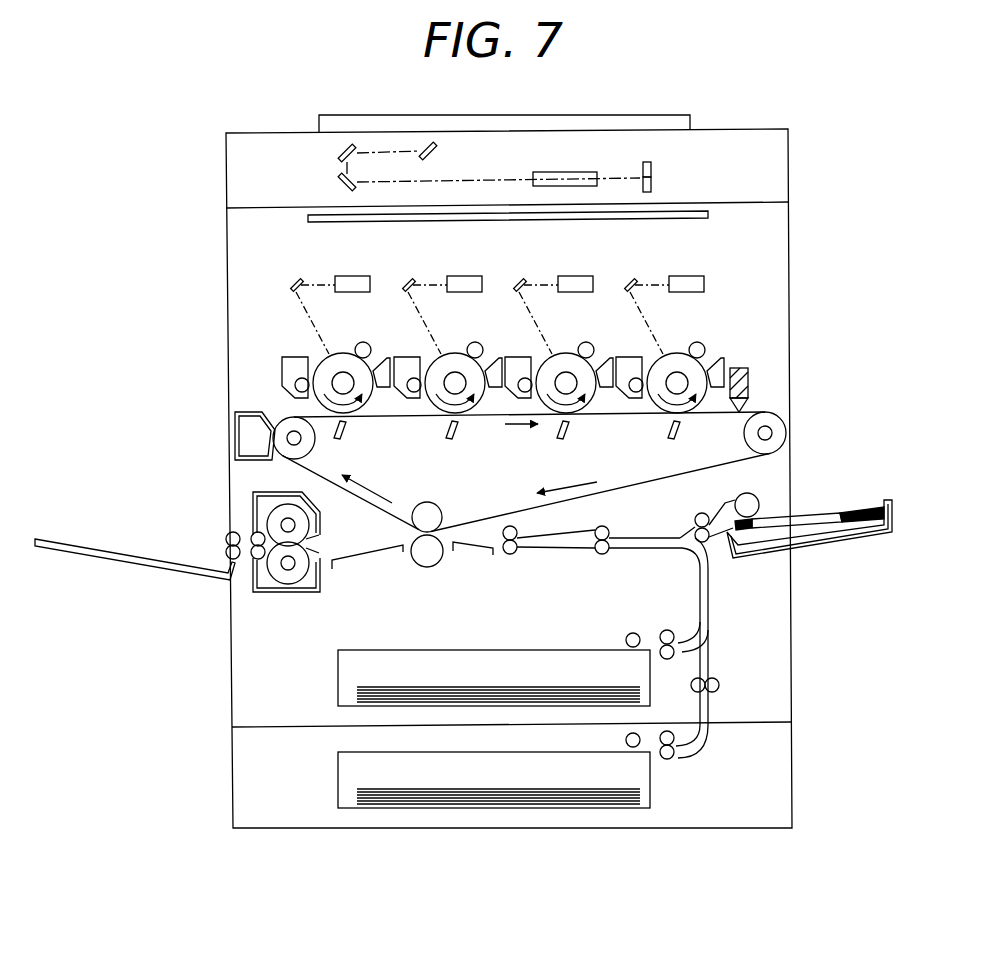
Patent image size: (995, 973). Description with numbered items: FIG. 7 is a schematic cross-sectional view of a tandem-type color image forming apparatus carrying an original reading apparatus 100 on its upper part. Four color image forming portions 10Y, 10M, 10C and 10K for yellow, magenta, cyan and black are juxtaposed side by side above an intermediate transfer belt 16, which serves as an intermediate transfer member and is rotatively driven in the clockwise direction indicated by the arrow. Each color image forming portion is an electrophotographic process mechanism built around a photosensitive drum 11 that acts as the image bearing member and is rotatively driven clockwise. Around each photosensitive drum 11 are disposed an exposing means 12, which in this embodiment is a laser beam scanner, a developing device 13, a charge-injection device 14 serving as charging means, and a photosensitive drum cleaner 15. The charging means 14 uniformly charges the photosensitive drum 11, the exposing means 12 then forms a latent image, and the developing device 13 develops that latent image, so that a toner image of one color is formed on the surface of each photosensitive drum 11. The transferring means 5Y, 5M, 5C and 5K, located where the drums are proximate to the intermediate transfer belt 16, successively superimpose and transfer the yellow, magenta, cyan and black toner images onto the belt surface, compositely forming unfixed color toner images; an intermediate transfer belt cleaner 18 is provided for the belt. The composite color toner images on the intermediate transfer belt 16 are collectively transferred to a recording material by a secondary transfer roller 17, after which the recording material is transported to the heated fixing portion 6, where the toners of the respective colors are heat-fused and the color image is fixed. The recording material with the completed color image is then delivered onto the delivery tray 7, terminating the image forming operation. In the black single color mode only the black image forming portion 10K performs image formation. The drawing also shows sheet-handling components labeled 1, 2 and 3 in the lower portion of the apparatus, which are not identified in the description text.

The original reading apparatus 100 is at (775, 160).
The yellow color image forming portion 10Y is at (275, 297).
The magenta color image forming portion 10M is at (390, 297).
The cyan color image forming portion 10C is at (502, 297).
The black color image forming portion 10K is at (725, 297).
The photosensitive drum 11 is at (330, 357).
The exposing means 12 is at (351, 293).
The developing device 13 is at (282, 366).
The charge-injection device 14 is at (369, 344).
The photosensitive drum cleaner 15 is at (383, 388).
The intermediate transfer belt 16 is at (636, 484).
The secondary transfer roller 17 is at (430, 558).
The intermediate transfer belt cleaner 18 is at (243, 432).
The transferring means 5Y is at (345, 440).
The transferring means 5M is at (453, 440).
The transferring means 5C is at (562, 440).
The transferring means 5K is at (681, 434).
The sheet feeding tray 1 is at (840, 545).
The sheet conveying path 2 is at (712, 633).
The registration rollers 3 is at (513, 555).
The fixing portion 6 is at (283, 590).
The delivery tray 7 is at (125, 557).